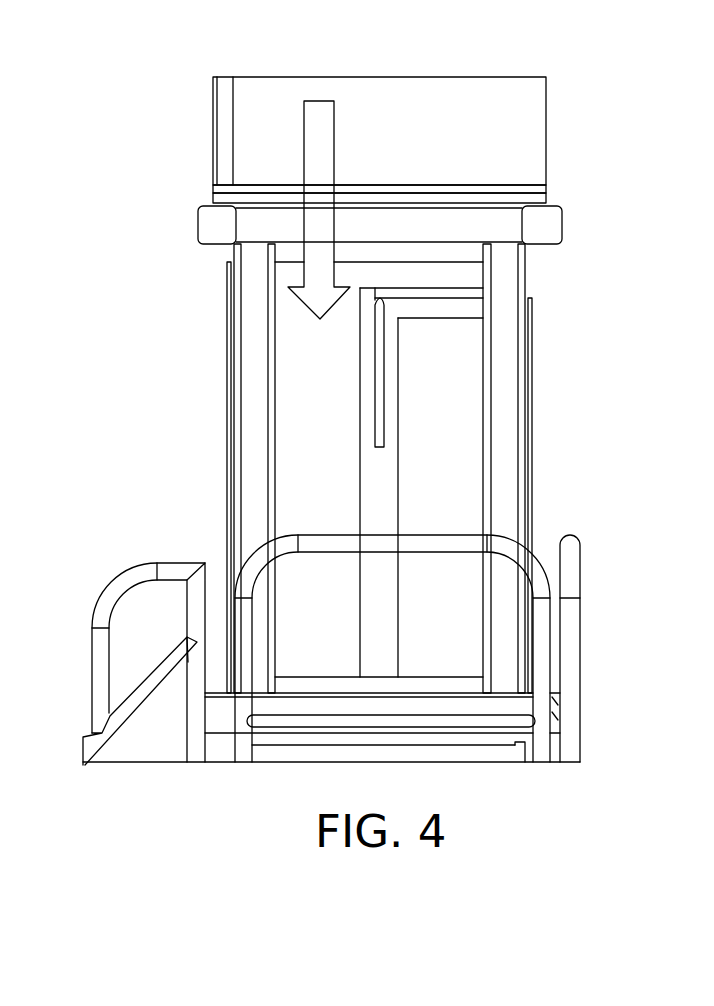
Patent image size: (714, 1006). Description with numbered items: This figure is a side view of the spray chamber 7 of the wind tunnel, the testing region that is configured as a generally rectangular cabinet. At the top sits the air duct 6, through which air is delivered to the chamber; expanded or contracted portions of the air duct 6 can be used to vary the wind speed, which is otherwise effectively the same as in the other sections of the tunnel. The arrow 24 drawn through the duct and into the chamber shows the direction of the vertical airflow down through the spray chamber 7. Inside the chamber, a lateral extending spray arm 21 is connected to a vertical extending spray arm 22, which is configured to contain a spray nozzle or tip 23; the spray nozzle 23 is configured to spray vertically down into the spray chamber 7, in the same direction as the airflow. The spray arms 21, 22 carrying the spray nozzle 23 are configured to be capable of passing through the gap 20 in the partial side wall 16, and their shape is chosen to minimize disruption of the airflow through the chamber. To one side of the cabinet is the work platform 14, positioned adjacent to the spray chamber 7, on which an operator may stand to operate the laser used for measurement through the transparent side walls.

The air duct 6 is at (443, 98).
The spray chamber 7 is at (228, 508).
The work platform 14 is at (92, 663).
The partial side wall 16 is at (290, 387).
The gap 20 is at (378, 494).
The lateral extending spray arm 21 is at (445, 320).
The vertical extending spray arm 22 is at (384, 406).
The spray nozzle 23 is at (375, 447).
The arrow 24 is at (334, 155).